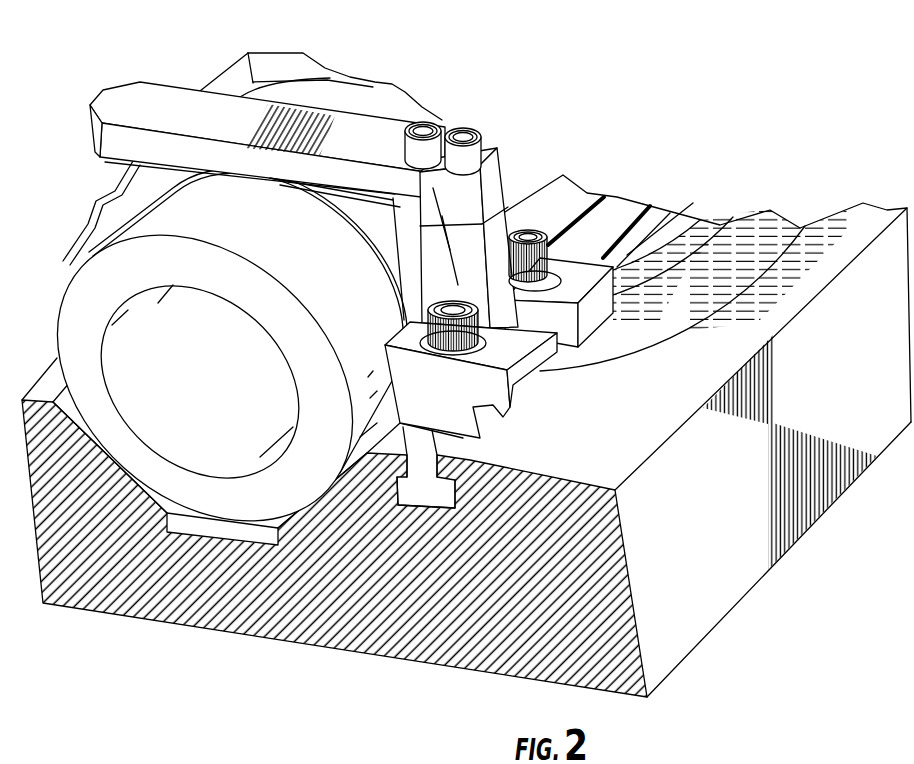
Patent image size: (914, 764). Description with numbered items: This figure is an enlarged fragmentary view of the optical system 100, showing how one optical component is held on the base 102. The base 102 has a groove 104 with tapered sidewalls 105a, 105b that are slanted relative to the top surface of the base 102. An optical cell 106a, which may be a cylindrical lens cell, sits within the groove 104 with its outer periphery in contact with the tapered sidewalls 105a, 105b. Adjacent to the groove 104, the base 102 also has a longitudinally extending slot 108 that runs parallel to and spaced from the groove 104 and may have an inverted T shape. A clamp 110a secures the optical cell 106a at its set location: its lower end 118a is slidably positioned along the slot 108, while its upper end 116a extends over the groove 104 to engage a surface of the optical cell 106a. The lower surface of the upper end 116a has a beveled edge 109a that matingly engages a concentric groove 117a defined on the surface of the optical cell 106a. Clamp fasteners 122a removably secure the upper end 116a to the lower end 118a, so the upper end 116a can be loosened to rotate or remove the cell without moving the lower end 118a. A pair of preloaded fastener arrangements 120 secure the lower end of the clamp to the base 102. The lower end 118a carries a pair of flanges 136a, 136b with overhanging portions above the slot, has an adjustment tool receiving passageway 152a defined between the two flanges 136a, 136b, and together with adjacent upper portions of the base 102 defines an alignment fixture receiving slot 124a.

The optical system 100 is at (456, 367).
The base 102 is at (466, 422).
The groove 104 is at (215, 530).
The tapered sidewall 105a is at (107, 477).
The tapered sidewall 105b is at (325, 470).
The optical cell 106a is at (75, 311).
The slot 108 is at (440, 500).
The beveled edge 109a is at (118, 163).
The clamp 110a is at (498, 190).
The upper end 116a is at (175, 107).
The concentric groove 117a is at (330, 240).
The lower end 118a is at (548, 257).
The preloaded fastener arrangements 120 is at (498, 332).
The clamp fasteners 122a is at (445, 122).
The alignment fixture receiving slot 124a is at (707, 618).
The flange 136a is at (690, 285).
The flange 136b is at (760, 320).
The adjustment tool receiving passageway 152a is at (767, 270).